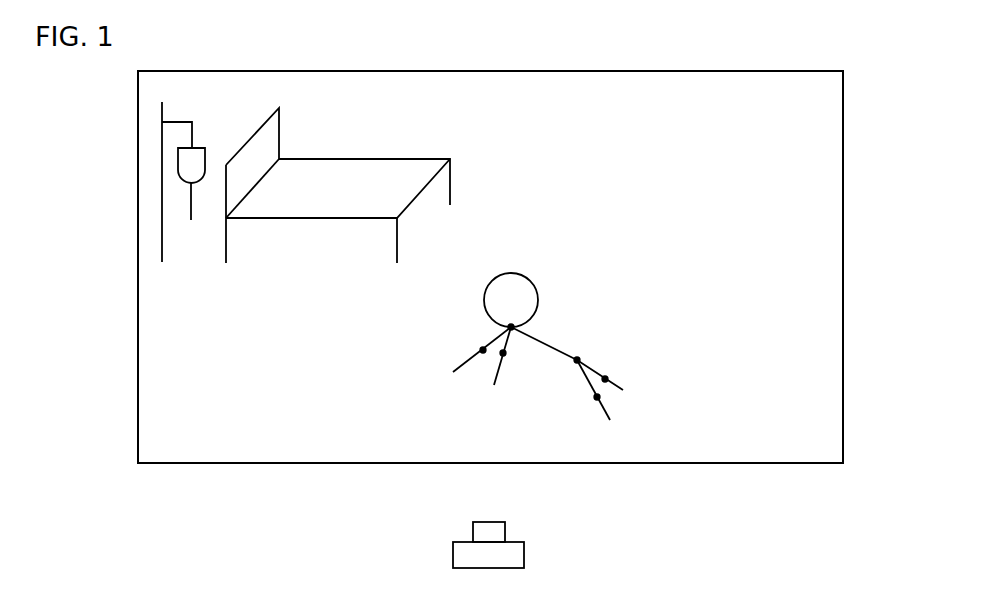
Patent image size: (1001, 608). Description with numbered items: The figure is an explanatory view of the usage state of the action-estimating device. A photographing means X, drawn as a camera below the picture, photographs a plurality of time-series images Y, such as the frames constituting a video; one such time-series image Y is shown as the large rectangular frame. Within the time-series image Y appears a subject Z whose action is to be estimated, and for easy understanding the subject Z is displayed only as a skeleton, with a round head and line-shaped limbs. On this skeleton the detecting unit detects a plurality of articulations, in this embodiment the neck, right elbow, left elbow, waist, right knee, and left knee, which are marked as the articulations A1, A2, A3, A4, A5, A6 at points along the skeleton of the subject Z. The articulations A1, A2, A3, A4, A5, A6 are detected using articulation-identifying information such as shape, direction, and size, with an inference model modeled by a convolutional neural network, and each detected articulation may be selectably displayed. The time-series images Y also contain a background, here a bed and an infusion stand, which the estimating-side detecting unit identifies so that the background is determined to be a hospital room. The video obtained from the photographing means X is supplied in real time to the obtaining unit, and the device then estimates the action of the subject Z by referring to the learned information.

The time-series images Y is at (863, 128).
The subject Z is at (513, 248).
The articulation A1 is at (488, 323).
The articulation A2 is at (473, 345).
The articulation A3 is at (510, 362).
The articulation A4 is at (575, 367).
The articulation A5 is at (595, 407).
The articulation A6 is at (607, 370).
The photographing means X is at (550, 545).